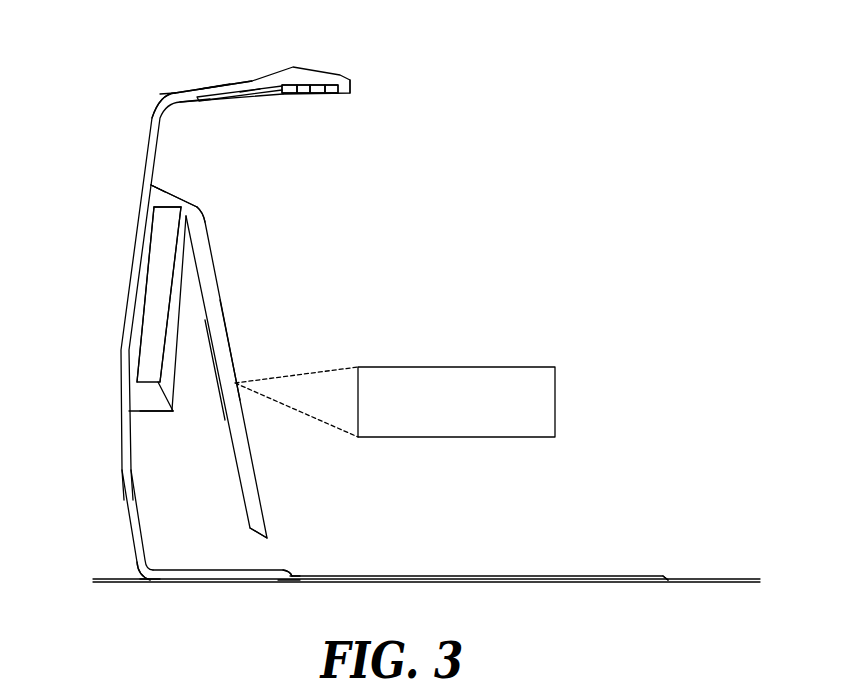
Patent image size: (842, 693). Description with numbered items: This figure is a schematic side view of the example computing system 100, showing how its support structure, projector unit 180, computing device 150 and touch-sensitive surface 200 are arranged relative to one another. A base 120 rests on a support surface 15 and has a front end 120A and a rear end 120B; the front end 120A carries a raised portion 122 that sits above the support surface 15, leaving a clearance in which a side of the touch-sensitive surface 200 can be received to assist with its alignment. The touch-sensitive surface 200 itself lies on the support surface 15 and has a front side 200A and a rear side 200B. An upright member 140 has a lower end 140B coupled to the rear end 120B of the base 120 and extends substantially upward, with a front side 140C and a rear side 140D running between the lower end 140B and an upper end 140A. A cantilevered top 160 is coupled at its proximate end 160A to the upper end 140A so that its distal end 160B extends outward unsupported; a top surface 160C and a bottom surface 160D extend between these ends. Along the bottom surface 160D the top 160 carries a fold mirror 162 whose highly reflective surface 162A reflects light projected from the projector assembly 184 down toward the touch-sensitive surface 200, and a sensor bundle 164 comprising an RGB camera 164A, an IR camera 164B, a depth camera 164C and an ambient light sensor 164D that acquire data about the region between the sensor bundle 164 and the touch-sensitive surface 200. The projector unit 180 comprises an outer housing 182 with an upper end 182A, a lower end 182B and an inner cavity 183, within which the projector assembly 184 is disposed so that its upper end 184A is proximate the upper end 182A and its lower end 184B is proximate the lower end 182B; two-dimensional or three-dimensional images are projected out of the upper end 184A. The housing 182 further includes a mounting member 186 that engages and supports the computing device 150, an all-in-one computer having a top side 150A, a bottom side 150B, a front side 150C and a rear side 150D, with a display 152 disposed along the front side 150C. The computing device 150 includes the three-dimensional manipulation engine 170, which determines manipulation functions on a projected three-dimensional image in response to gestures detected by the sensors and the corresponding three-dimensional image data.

The computing system 100 is at (514, 170).
The support surface 15 is at (702, 579).
The base 120 is at (238, 569).
The front end 120A is at (298, 575).
The rear end 120B is at (149, 583).
The raised portion 122 is at (286, 570).
The upright member 140 is at (121, 392).
The upper end 140A is at (150, 102).
The lower end 140B is at (138, 568).
The front side 140C is at (140, 490).
The rear side 140D is at (125, 490).
The computing device 150 is at (236, 297).
The top side 150A is at (200, 208).
The bottom side 150B is at (268, 538).
The front side 150C is at (228, 352).
The rear side 150D is at (228, 462).
The display 152 is at (251, 361).
The top 160 is at (232, 46).
The proximate end 160A is at (160, 97).
The distal end 160B is at (356, 79).
The top surface 160C is at (207, 88).
The bottom surface 160D is at (186, 108).
The fold mirror 162 is at (200, 95).
The reflective surface 162A is at (250, 98).
The sensor bundle 164 is at (283, 101).
The RGB camera 164A is at (330, 85).
The IR camera 164B is at (316, 85).
The depth camera 164C is at (303, 85).
The ambient light sensor 164D is at (290, 85).
The 3D manipulation engine 170 is at (442, 438).
The projector unit 180 is at (123, 328).
The outer housing 182 is at (143, 414).
The upper end 182A is at (151, 186).
The lower end 182B is at (157, 420).
The inner cavity 183 is at (145, 238).
The projector assembly 184 is at (148, 283).
The upper end 184A is at (145, 201).
The lower end 184B is at (166, 396).
The mounting member 186 is at (192, 233).
The touch-sensitive surface 200 is at (632, 577).
The front side 200A is at (667, 582).
The rear side 200B is at (278, 583).